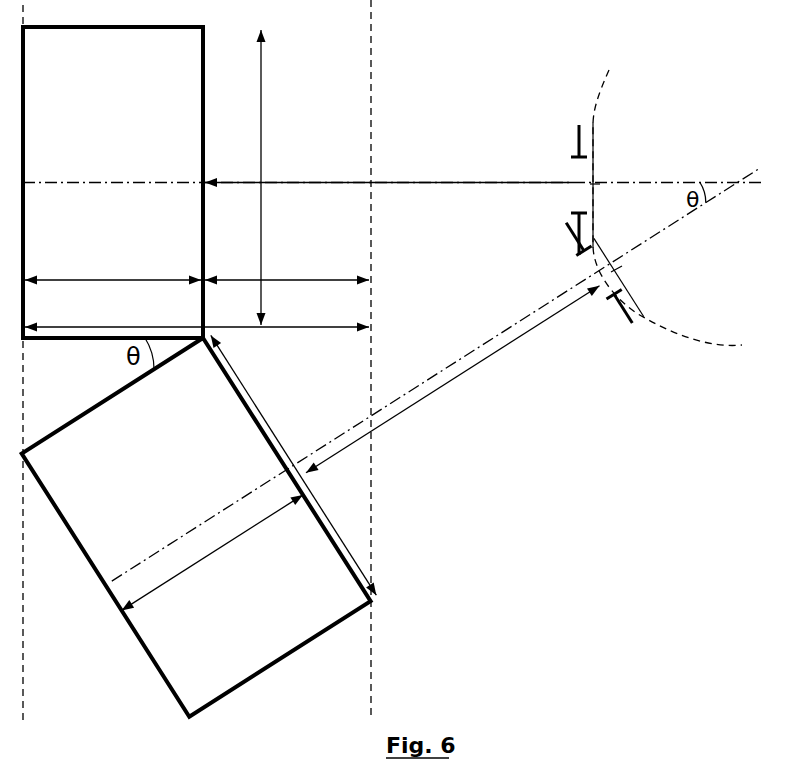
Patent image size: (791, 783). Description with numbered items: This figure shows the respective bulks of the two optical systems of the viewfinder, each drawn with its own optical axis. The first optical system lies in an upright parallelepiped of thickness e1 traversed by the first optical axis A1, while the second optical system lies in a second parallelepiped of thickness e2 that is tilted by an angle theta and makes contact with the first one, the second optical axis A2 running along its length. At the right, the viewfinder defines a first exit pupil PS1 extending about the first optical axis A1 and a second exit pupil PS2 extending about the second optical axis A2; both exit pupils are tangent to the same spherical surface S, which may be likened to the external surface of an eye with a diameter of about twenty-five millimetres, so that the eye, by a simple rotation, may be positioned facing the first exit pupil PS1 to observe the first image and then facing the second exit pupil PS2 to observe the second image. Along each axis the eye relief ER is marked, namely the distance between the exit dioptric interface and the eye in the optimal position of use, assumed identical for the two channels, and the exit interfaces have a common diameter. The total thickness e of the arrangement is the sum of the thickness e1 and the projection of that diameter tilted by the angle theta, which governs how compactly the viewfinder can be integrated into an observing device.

The first optical axis A1 is at (182, 176).
The second optical axis A2 is at (246, 488).
The spherical surface S is at (606, 68).
The first exit pupil PS1 is at (607, 188).
The second exit pupil PS2 is at (614, 273).
The eye relief ER is at (402, 312).
The total thickness e is at (197, 314).
The first thickness e1 is at (113, 265).
The second thickness e2 is at (212, 553).